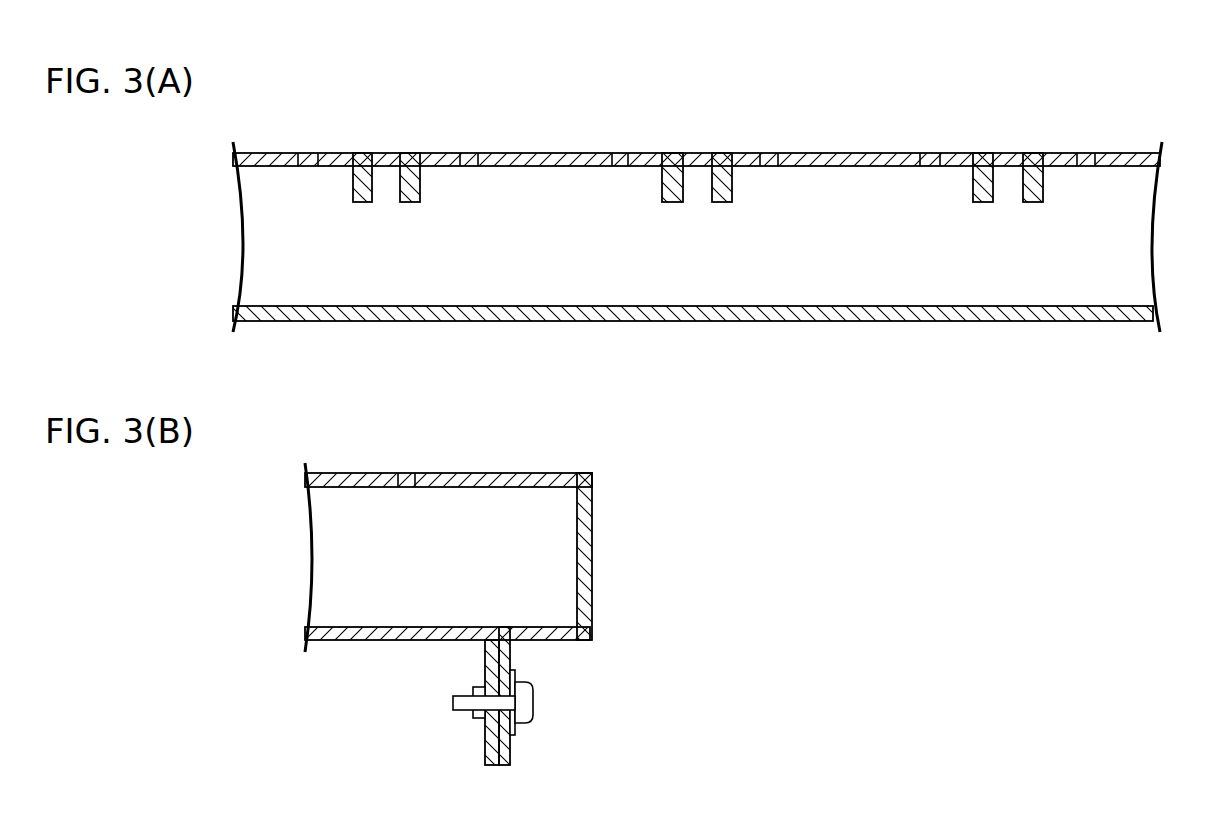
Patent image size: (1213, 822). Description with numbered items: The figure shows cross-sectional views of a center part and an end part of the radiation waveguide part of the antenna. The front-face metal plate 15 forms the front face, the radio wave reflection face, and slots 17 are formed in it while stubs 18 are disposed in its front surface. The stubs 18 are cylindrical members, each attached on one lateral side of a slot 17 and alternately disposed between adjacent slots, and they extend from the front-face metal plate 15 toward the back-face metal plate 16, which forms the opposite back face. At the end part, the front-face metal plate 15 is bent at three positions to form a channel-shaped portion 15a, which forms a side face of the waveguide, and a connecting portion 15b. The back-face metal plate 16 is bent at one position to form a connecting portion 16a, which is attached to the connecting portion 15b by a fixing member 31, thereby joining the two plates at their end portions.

In FIG. 3A, the front-face metal plate 15 is at (540, 160).
In FIG. 3B, the front-face metal plate 15 is at (472, 473).
In FIG. 3B, the channel-shaped portion 15a is at (568, 563).
In FIG. 3B, the connecting portion 15b is at (512, 652).
In FIG. 3A, the back-face metal plate 16 is at (741, 321).
In FIG. 3B, the back-face metal plate 16 is at (318, 640).
In FIG. 3B, the connecting portion 16a is at (487, 651).
In FIG. 3A, the slot 17 is at (310, 153).
In FIG. 3B, the slot 17 is at (408, 473).
In FIG. 3A, the stub 18 is at (410, 157).
In FIG. 3B, the fixing member 31 is at (536, 703).